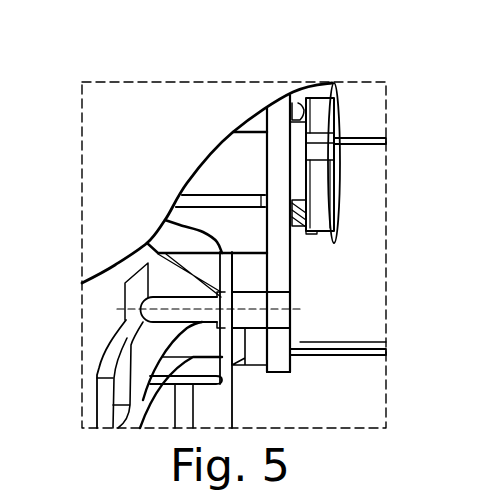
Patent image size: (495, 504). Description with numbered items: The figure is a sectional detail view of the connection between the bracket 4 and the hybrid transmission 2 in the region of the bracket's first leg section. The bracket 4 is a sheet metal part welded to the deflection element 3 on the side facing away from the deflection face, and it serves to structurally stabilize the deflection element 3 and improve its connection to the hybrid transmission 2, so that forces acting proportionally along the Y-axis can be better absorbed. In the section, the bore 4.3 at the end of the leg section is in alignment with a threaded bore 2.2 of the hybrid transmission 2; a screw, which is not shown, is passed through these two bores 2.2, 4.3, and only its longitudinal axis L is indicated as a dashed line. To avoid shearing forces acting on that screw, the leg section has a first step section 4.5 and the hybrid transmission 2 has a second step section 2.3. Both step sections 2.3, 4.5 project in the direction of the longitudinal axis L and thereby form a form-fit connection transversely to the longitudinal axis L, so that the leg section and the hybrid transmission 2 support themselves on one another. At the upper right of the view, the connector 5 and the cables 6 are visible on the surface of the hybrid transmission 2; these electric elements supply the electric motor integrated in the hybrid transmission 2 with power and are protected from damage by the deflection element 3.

The hybrid transmission 2 is at (323, 414).
The threaded bore 2.2 is at (246, 284).
The second step section 2.3 is at (276, 360).
The deflection element 3 is at (112, 137).
The bracket 4 is at (297, 112).
The bore 4.3 is at (300, 309).
The first step section 4.5 is at (251, 258).
The connector 5 is at (355, 160).
The cables 6 is at (232, 150).
The longitudinal axis L is at (117, 310).